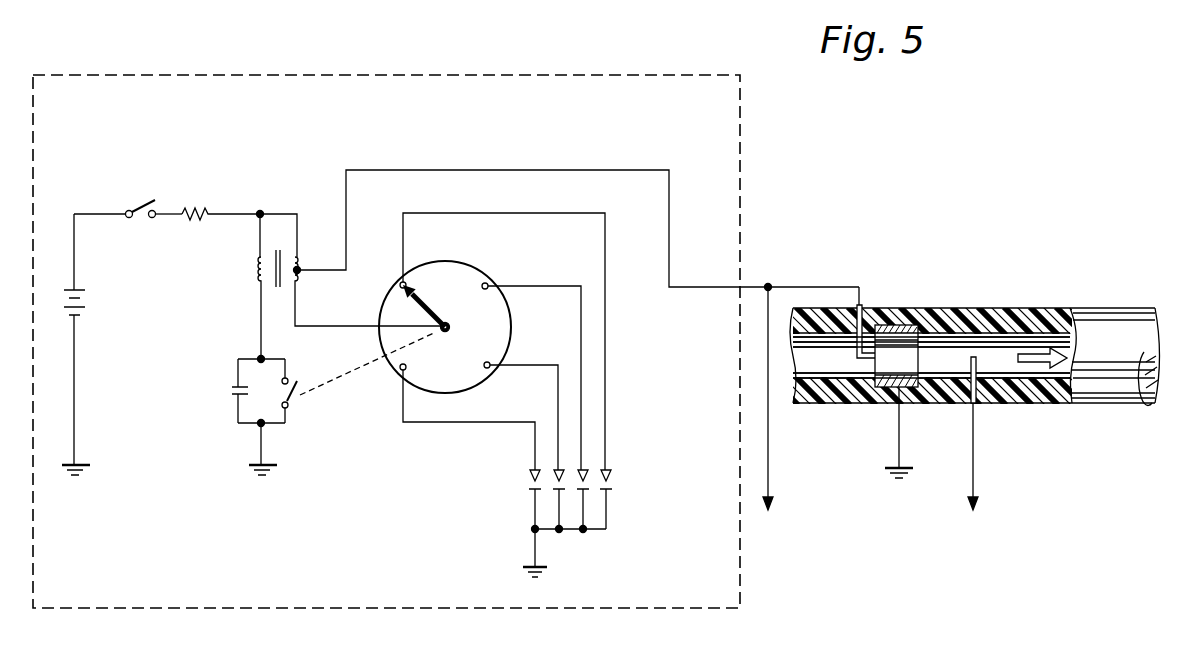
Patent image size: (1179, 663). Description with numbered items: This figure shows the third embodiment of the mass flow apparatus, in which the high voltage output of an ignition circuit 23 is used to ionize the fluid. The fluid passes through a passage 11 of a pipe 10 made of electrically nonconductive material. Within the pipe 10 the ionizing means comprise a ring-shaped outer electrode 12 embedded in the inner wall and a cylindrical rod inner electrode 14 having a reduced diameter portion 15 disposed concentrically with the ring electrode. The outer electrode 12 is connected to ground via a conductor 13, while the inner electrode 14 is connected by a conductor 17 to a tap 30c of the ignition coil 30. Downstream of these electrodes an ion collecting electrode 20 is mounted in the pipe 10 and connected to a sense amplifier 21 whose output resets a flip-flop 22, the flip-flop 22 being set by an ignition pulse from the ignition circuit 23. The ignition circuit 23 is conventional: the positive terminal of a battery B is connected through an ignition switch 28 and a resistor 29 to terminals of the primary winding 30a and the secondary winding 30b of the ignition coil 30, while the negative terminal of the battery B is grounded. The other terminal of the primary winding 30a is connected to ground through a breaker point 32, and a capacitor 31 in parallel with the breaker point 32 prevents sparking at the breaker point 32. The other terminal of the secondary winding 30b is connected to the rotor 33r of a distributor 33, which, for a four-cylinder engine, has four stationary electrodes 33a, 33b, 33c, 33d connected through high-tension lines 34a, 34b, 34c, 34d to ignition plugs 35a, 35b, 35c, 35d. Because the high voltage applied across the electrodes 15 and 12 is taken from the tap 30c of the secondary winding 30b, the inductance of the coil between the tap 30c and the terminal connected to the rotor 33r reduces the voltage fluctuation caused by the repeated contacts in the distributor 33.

The pipe 10 is at (965, 337).
The passage 11 is at (940, 343).
The outer electrode 12 is at (887, 387).
The conductor 13 is at (900, 415).
The inner electrode 14 is at (870, 362).
The reduced diameter portion 15 is at (893, 353).
The conductor 17 is at (768, 287).
The ion collecting electrode 20 is at (980, 361).
The sense amplifier 21 is at (1010, 482).
The flip-flop 22 is at (820, 424).
The ignition circuit 23 is at (386, 341).
The ignition switch 28 is at (140, 209).
The resistor 29 is at (202, 207).
The ignition coil 30 is at (529, 251).
The primary winding 30a is at (262, 264).
The secondary winding 30b is at (299, 283).
The tap 30c is at (298, 269).
The capacitor 31 is at (233, 392).
The breaker point 32 is at (298, 398).
The distributor 33 is at (460, 321).
The stationary electrode 33a is at (408, 280).
The stationary electrode 33b is at (488, 282).
The stationary electrode 33c is at (492, 362).
The stationary electrode 33d is at (407, 372).
The rotor 33r is at (438, 308).
The high-tension line 34a is at (513, 213).
The high-tension line 34b is at (530, 286).
The high-tension line 34c is at (522, 368).
The high-tension line 34d is at (462, 422).
The ignition plug 35a is at (612, 484).
The ignition plug 35b is at (588, 484).
The ignition plug 35c is at (563, 484).
The ignition plug 35d is at (531, 487).
The battery B is at (90, 303).